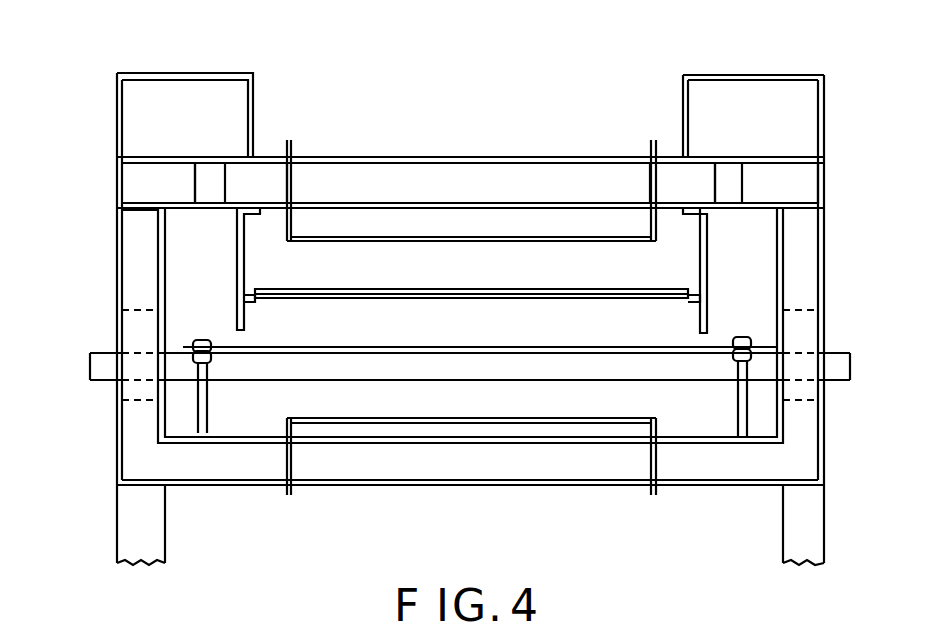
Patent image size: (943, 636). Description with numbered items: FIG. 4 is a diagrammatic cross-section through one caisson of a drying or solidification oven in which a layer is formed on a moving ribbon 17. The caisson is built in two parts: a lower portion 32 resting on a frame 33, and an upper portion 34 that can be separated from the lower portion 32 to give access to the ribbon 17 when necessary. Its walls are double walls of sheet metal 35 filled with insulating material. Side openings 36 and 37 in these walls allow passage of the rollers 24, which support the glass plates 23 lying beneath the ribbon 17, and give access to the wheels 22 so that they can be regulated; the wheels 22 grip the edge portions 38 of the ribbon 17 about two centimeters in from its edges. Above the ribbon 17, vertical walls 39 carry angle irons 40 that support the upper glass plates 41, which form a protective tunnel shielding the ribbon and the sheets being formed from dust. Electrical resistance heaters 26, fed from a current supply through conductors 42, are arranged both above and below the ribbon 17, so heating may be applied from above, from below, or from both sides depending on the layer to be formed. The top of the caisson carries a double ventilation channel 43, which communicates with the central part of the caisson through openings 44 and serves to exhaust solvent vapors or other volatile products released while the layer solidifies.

The ribbon 17 is at (377, 346).
The wheels 22 is at (735, 352).
The glass plates 23 is at (335, 354).
The rollers 24 is at (88, 365).
The electrical resistance heaters 26 is at (441, 234).
The lower portion 32 is at (140, 455).
The frame 33 is at (158, 525).
The upper portion 34 is at (138, 182).
The double walls of sheet metal 35 is at (160, 268).
The side opening 36 is at (142, 378).
The side opening 37 is at (130, 322).
The edge portions 38 is at (194, 338).
The vertical walls 39 is at (247, 262).
The angle irons 40 is at (258, 303).
The upper glass plates 41 is at (477, 288).
The conductors 42 is at (288, 146).
The double ventilation channel 43 is at (205, 90).
The openings 44 is at (205, 165).